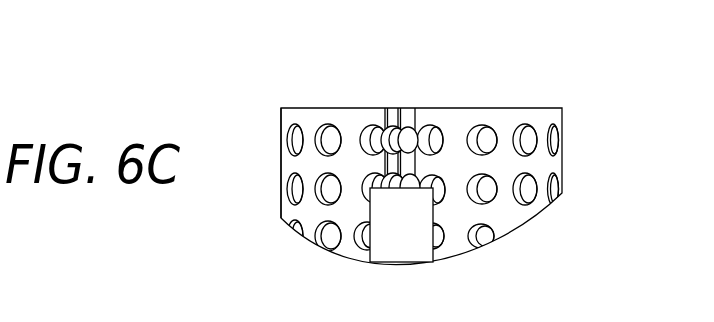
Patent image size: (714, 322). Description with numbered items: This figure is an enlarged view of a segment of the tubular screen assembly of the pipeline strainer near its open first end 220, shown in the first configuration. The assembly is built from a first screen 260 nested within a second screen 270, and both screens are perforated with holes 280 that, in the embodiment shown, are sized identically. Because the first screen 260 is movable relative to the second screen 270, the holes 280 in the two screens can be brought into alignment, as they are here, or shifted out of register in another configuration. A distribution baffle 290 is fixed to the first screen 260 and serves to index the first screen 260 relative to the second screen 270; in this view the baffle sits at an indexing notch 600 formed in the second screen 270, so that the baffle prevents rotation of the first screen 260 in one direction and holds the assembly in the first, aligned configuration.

The first end 220 is at (563, 114).
The second screen 270 is at (288, 118).
The holes 280 is at (475, 124).
The first screen 260 is at (385, 117).
The indexing notch 600 is at (406, 117).
The distribution baffle 290 is at (408, 195).